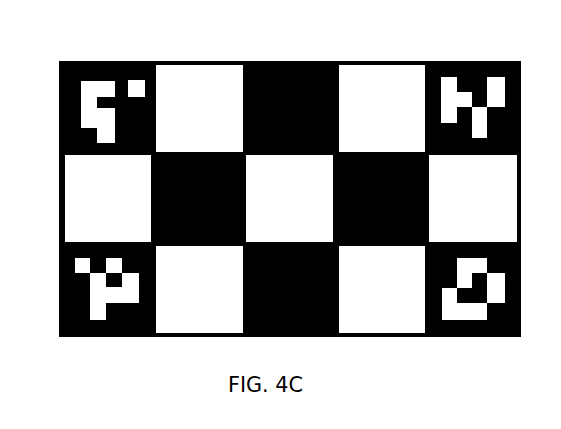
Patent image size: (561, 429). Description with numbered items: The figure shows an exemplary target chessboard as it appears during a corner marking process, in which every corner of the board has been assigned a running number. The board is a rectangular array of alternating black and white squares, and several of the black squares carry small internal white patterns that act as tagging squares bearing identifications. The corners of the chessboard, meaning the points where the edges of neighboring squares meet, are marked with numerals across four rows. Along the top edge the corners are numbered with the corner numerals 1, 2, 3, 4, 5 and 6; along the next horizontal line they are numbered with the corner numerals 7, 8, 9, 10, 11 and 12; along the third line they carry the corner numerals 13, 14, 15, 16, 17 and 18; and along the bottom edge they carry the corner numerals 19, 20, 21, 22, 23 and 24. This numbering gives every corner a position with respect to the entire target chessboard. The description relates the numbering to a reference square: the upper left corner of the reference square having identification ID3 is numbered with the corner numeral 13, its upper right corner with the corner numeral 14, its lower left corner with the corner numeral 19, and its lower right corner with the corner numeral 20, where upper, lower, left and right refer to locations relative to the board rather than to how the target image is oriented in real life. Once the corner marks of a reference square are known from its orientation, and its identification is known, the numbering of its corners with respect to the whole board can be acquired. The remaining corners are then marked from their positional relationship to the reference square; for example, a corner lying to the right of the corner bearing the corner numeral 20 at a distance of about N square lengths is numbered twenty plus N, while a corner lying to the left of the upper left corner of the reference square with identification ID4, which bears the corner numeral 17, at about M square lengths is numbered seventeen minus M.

The corner numeral 1 is at (49, 42).
The corner numeral 2 is at (149, 42).
The corner numeral 3 is at (236, 42).
The corner numeral 4 is at (325, 42).
The corner numeral 5 is at (418, 42).
The corner numeral 6 is at (511, 42).
The corner numeral 7 is at (48, 141).
The corner numeral 8 is at (140, 141).
The corner numeral 9 is at (234, 141).
The corner numeral 10 is at (317, 140).
The corner numeral 11 is at (410, 141).
The corner numeral 12 is at (507, 141).
The corner numeral 13 is at (41, 228).
The corner numeral 14 is at (134, 228).
The corner numeral 15 is at (227, 228).
The corner numeral 16 is at (316, 228).
The corner numeral 17 is at (410, 228).
The corner numeral 18 is at (502, 228).
The corner numeral 19 is at (39, 325).
The corner numeral 20 is at (135, 325).
The corner numeral 21 is at (225, 325).
The corner numeral 22 is at (318, 325).
The corner numeral 23 is at (410, 325).
The corner numeral 24 is at (506, 325).